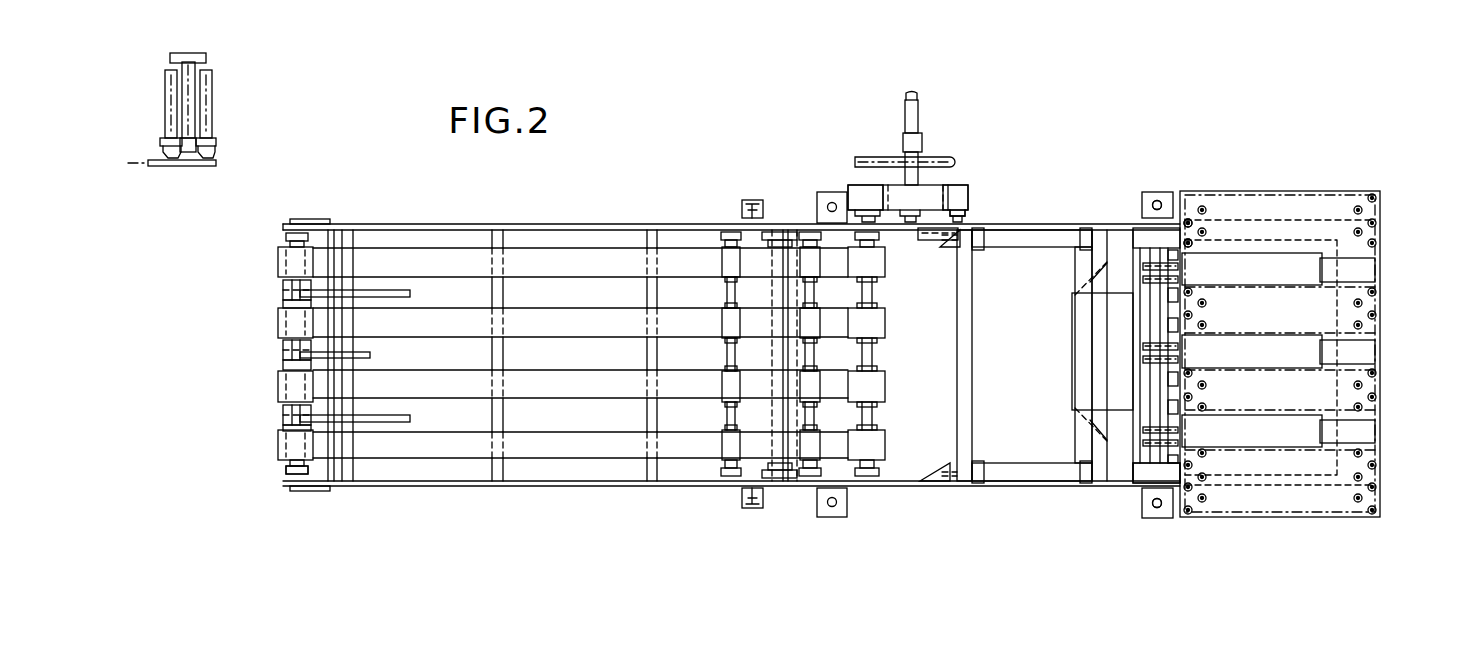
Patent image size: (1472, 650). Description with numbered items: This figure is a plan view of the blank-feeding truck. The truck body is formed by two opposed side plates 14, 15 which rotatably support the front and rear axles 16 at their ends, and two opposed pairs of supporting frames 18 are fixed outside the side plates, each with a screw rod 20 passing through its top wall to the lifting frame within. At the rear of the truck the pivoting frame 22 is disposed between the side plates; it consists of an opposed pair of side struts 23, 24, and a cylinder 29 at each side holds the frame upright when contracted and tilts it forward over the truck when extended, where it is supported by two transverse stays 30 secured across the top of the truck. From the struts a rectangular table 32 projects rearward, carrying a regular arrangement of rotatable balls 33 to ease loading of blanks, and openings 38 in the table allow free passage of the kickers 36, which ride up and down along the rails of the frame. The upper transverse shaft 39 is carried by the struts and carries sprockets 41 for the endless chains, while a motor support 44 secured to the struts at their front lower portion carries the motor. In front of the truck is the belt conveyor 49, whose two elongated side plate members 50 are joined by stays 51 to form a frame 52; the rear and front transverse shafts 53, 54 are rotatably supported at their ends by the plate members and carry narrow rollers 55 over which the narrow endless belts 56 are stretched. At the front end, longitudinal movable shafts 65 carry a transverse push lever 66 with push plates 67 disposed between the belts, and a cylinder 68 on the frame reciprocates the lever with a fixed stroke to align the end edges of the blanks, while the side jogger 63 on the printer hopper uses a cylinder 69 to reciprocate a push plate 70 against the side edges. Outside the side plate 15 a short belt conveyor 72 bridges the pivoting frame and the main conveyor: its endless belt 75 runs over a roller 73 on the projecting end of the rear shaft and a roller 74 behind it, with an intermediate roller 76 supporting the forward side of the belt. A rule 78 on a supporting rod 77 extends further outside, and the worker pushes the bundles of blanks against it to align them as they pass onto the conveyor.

The side plate 14 is at (953, 487).
The side plate 15 is at (780, 222).
The axle 16 is at (775, 415).
The supporting frame 18 is at (833, 520).
The screw rod 20 is at (1155, 200).
The pivoting frame 22 is at (1190, 221).
The side strut 23 is at (1175, 485).
The side strut 24 is at (1145, 236).
The cylinder 29 is at (1033, 228).
The transverse stay 30 is at (1077, 283).
The table 32 is at (1372, 207).
The ball 33 is at (1372, 243).
The kicker 36 is at (1307, 343).
The opening 38 is at (1277, 338).
The upper transverse shaft 39 is at (1190, 243).
The sprocket 41 is at (1140, 470).
The motor support 44 is at (1137, 478).
The belt conveyor 49 is at (392, 214).
The side plate member 50 is at (477, 226).
The stay 51 is at (652, 240).
The frame 52 is at (437, 214).
The rear transverse shaft 53 is at (867, 470).
The front transverse shaft 54 is at (290, 466).
The roller 55 is at (290, 246).
The endless belt 56 is at (542, 452).
The side jogger 63 is at (212, 100).
The longitudinal movable shaft 65 is at (410, 420).
The push lever 66 is at (285, 345).
The push plate 67 is at (360, 415).
The cylinder 68 is at (282, 372).
The cylinder 69 is at (205, 60).
The push plate 70 is at (148, 160).
The short belt conveyor 72 is at (954, 175).
The roller 73 is at (850, 185).
The roller 74 is at (968, 183).
The endless belt 75 is at (930, 183).
The intermediate roller 76 is at (905, 150).
The supporting rod 77 is at (912, 91).
The rule 78 is at (866, 158).